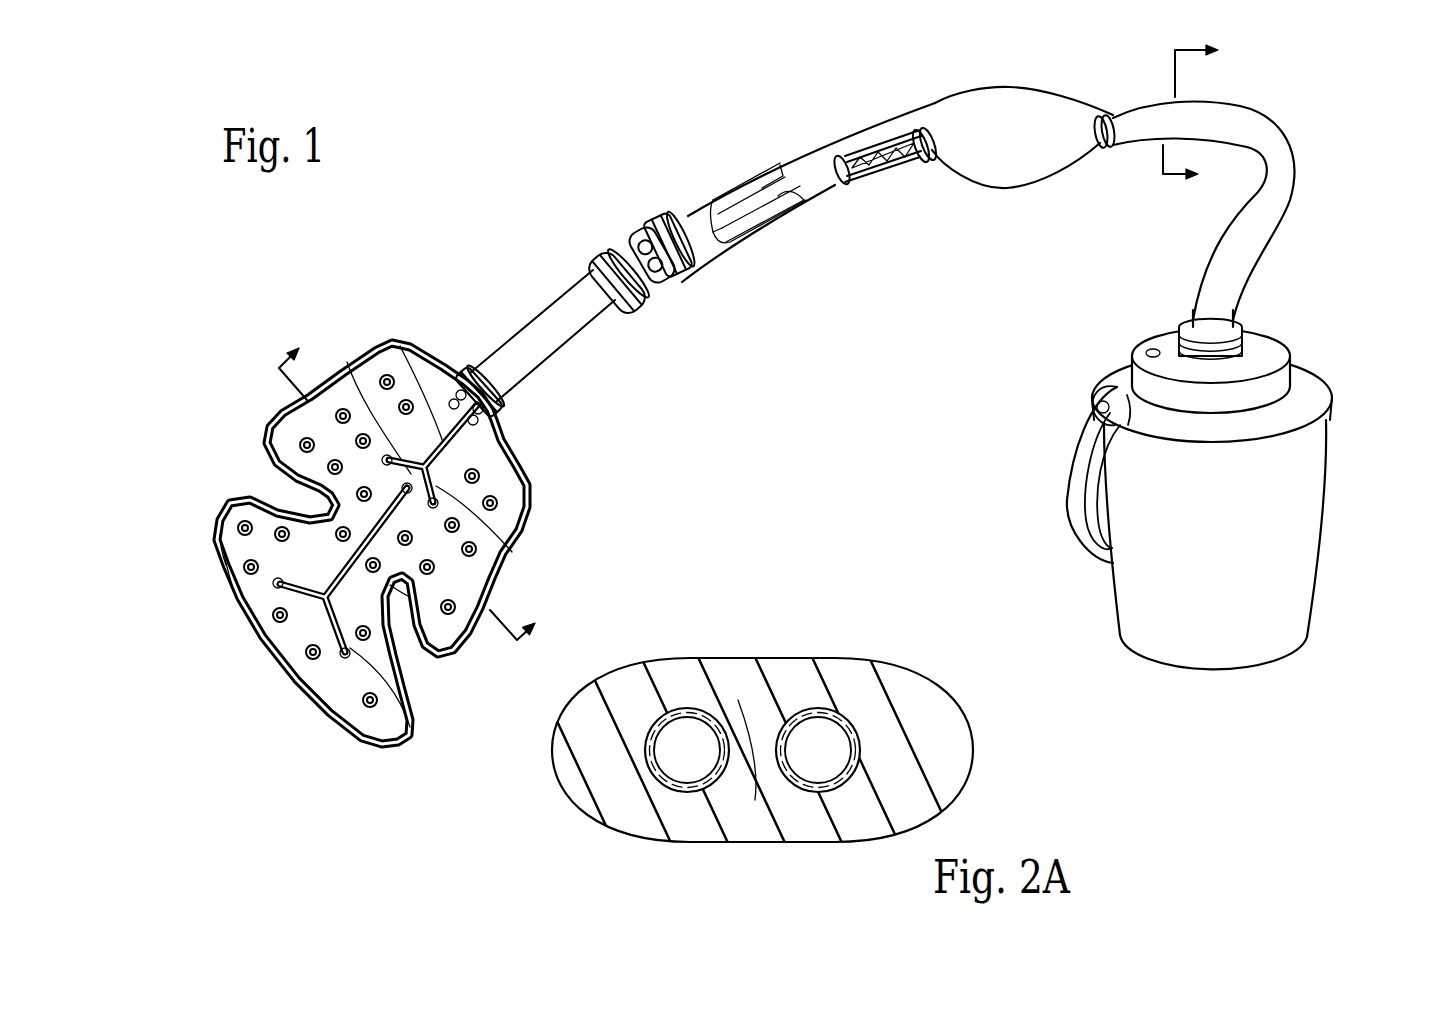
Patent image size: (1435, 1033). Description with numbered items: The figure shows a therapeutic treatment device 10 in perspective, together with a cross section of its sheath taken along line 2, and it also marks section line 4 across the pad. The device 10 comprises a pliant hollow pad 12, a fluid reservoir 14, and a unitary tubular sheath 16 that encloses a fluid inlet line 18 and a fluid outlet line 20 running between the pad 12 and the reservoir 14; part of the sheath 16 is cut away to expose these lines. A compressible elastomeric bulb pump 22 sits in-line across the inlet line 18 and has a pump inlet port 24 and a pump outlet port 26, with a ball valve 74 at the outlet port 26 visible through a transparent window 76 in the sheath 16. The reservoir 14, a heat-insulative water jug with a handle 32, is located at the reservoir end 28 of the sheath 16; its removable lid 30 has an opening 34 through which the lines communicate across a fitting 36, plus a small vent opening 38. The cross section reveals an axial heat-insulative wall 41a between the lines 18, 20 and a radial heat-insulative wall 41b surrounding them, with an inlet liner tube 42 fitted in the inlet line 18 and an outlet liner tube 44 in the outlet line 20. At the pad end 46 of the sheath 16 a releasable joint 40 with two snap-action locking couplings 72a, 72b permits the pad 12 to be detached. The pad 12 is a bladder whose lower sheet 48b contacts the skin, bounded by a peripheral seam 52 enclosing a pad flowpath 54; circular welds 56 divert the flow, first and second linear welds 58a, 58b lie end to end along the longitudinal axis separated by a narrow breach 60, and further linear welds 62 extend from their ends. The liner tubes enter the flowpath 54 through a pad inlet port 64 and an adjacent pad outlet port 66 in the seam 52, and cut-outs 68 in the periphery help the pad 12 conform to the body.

In FIG. 1, the therapeutic treatment device 10 is at (858, 384).
In FIG. 1, the pad 12 is at (398, 743).
In FIG. 1, the fluid reservoir 14 is at (1327, 460).
In FIG. 1, the unitary tubular sheath 16 is at (1255, 246).
In FIG. 2A, the unitary tubular sheath 16 is at (824, 657).
In FIG. 1, the fluid inlet line 18 is at (746, 224).
In FIG. 2A, the fluid inlet line 18 is at (850, 766).
In FIG. 1, the fluid outlet line 20 is at (745, 188).
In FIG. 2A, the fluid outlet line 20 is at (703, 738).
In FIG. 1, the bulb pump 22 is at (1033, 170).
In FIG. 1, the pump inlet port 24 is at (1096, 148).
In FIG. 1, the pump outlet port 26 is at (930, 160).
In FIG. 1, the reservoir end 28 is at (1193, 312).
In FIG. 1, the lid 30 is at (1287, 377).
In FIG. 1, the handle 32 is at (1080, 527).
In FIG. 1, the opening 34 is at (1247, 342).
In FIG. 1, the fitting 36 is at (1240, 320).
In FIG. 1, the vent opening 38 is at (1148, 348).
In FIG. 1, the releasable joint 40 is at (658, 220).
In FIG. 1, the inlet liner tube 42 is at (792, 203).
In FIG. 2A, the inlet liner tube 42 is at (840, 728).
In FIG. 1, the outlet liner tube 44 is at (768, 172).
In FIG. 2A, the outlet liner tube 44 is at (684, 712).
In FIG. 1, the pad end 46 is at (495, 367).
In FIG. 1, the lower sheet 48b is at (352, 682).
In FIG. 1, the peripheral seam 52 is at (218, 545).
In FIG. 1, the pad flowpath 54 is at (264, 598).
In FIG. 1, the circular welds 56 is at (243, 520).
In FIG. 1, the first linear weld 58a is at (396, 343).
In FIG. 1, the second linear weld 58b is at (337, 575).
In FIG. 1, the breach 60 is at (347, 372).
In FIG. 1, the linear welds 62 is at (497, 543).
In FIG. 1, the pad inlet port 64 is at (494, 404).
In FIG. 1, the pad outlet port 66 is at (463, 378).
In FIG. 1, the cut-outs 68 is at (407, 628).
In FIG. 1, the snap-action locking coupling 72a is at (648, 287).
In FIG. 1, the snap-action locking coupling 72b is at (637, 249).
In FIG. 1, the ball valve 74 is at (863, 176).
In FIG. 1, the transparent window 76 is at (890, 171).
In FIG. 2A, the axial heat-insulative wall 41a is at (753, 785).
In FIG. 2A, the radial heat-insulative wall 41b is at (605, 808).
In FIG. 1, the section line 2- 2 is at (1201, 114).
In FIG. 1, the section line 4- 4 is at (410, 479).